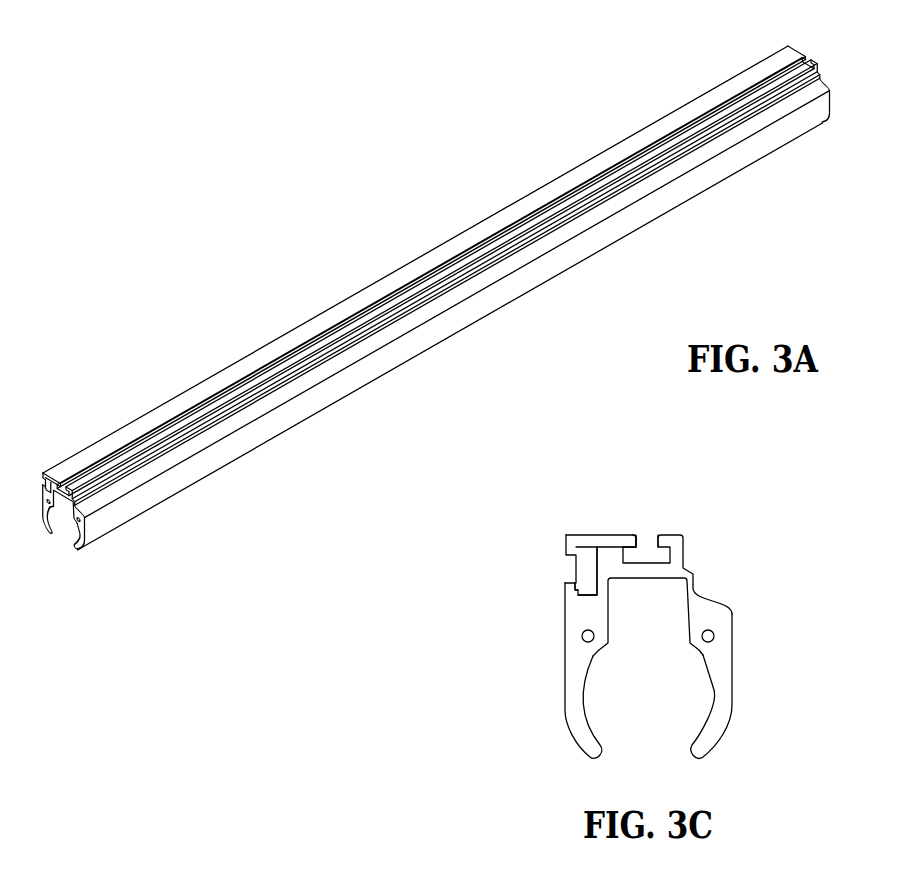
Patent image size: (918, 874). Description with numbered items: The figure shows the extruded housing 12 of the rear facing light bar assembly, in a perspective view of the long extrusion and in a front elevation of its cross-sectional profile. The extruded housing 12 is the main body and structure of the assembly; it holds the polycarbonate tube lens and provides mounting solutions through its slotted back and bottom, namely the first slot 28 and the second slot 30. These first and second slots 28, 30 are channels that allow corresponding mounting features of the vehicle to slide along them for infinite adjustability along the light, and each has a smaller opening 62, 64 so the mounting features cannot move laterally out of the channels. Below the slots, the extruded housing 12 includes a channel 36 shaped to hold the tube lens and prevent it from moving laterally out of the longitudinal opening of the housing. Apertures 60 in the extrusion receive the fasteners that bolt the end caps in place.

In FIG. 3A, the extruded housing 12 is at (436, 335).
In FIG. 3C, the extruded housing 12 is at (639, 615).
In FIG. 3C, the first slot 28 is at (668, 551).
In FIG. 3C, the second slot 30 is at (580, 549).
In FIG. 3A, the channel 36 is at (72, 532).
In FIG. 3C, the channel 36 is at (718, 705).
In FIG. 3C, the apertures 60 is at (582, 636).
In FIG. 3C, the smaller opening 62 is at (637, 543).
In FIG. 3C, the smaller opening 64 is at (570, 580).